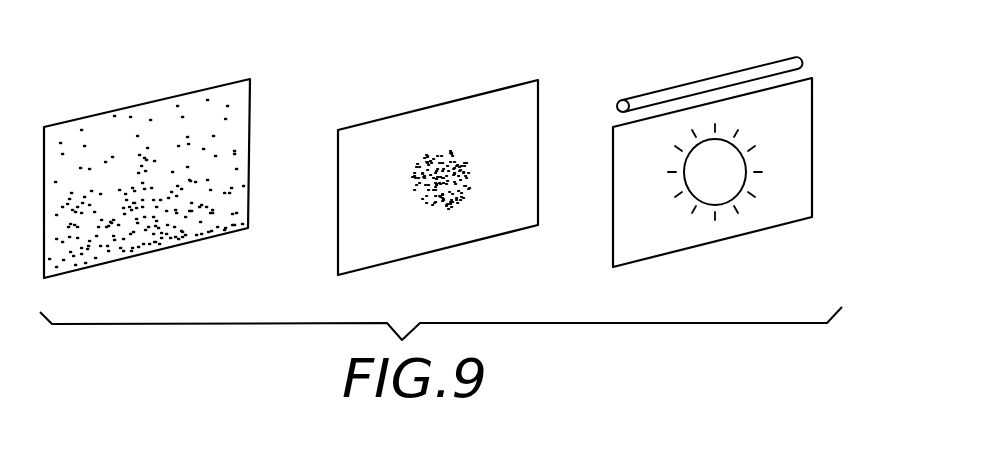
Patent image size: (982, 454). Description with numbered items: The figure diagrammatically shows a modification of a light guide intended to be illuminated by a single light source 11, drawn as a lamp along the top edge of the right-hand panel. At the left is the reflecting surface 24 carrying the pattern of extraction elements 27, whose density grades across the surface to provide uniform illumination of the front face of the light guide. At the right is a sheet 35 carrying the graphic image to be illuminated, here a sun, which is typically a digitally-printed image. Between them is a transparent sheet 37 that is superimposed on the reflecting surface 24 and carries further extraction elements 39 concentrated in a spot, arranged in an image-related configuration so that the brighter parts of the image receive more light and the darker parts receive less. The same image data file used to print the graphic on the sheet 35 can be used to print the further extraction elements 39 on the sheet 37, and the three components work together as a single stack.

The light source 11 is at (788, 57).
The reflecting surface 24 is at (149, 162).
The extraction elements 27 is at (175, 230).
The sheet 35 is at (747, 134).
The transparent sheet 37 is at (438, 153).
The further extraction elements 39 is at (435, 155).